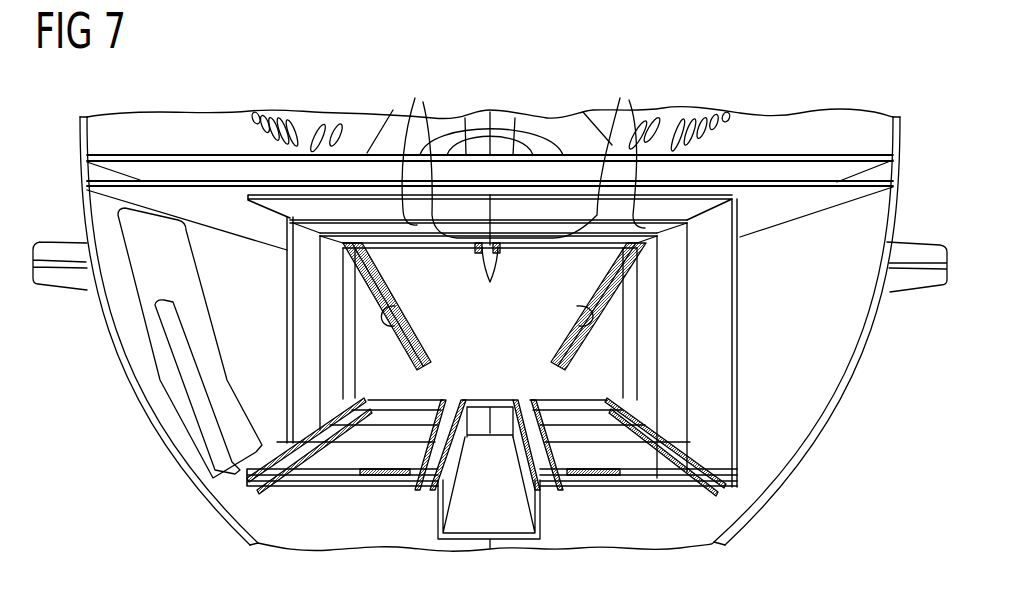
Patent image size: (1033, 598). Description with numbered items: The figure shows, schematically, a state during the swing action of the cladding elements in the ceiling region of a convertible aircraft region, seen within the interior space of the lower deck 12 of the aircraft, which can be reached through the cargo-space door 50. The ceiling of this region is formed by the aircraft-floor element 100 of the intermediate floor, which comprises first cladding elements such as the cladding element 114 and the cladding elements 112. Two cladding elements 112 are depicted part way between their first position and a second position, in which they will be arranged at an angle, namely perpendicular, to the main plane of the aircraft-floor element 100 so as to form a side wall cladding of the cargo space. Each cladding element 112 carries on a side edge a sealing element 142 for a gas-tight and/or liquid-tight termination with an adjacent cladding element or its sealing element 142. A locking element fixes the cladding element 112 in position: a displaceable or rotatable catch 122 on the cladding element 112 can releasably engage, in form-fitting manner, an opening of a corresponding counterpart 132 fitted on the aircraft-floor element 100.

The lower deck 12 is at (121, 389).
The cargo-space door 50 is at (207, 450).
The aircraft-floor element 100 is at (173, 183).
The cladding element 112 is at (560, 344).
The cladding element 114 is at (333, 210).
The catch 122 is at (550, 366).
The counterpart 132 is at (489, 257).
The sealing element 142 is at (396, 314).